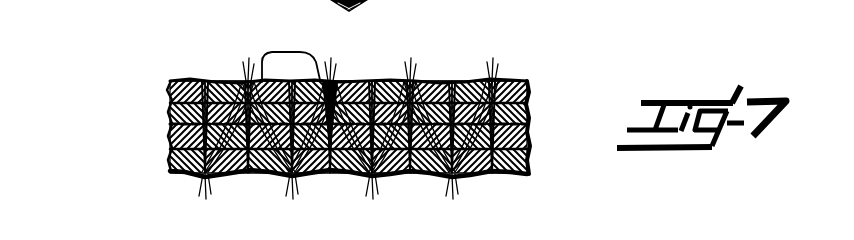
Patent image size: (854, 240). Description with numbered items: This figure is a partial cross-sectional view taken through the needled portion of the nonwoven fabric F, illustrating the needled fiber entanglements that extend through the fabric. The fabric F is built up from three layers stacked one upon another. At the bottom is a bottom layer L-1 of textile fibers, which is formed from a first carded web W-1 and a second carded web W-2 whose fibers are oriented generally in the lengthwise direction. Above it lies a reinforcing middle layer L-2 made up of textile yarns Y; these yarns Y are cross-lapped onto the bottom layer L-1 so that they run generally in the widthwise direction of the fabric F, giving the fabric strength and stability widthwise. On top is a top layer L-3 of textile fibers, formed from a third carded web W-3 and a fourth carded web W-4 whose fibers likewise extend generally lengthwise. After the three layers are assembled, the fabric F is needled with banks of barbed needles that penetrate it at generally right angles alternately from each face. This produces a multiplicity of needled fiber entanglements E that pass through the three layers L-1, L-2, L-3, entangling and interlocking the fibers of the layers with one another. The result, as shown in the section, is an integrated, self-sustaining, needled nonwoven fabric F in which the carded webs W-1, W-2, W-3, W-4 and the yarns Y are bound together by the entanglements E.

The nonwoven fabric F is at (183, 42).
The needled fiber entanglements E is at (294, 82).
The textile yarns Y is at (404, 82).
The bottom layer L-1 is at (140, 154).
The reinforcing middle layer L-2 is at (145, 124).
The top layer L-3 is at (148, 102).
The first carded web W-1 is at (530, 160).
The second carded web W-2 is at (530, 133).
The third carded web W-3 is at (528, 108).
The fourth carded web W-4 is at (528, 90).